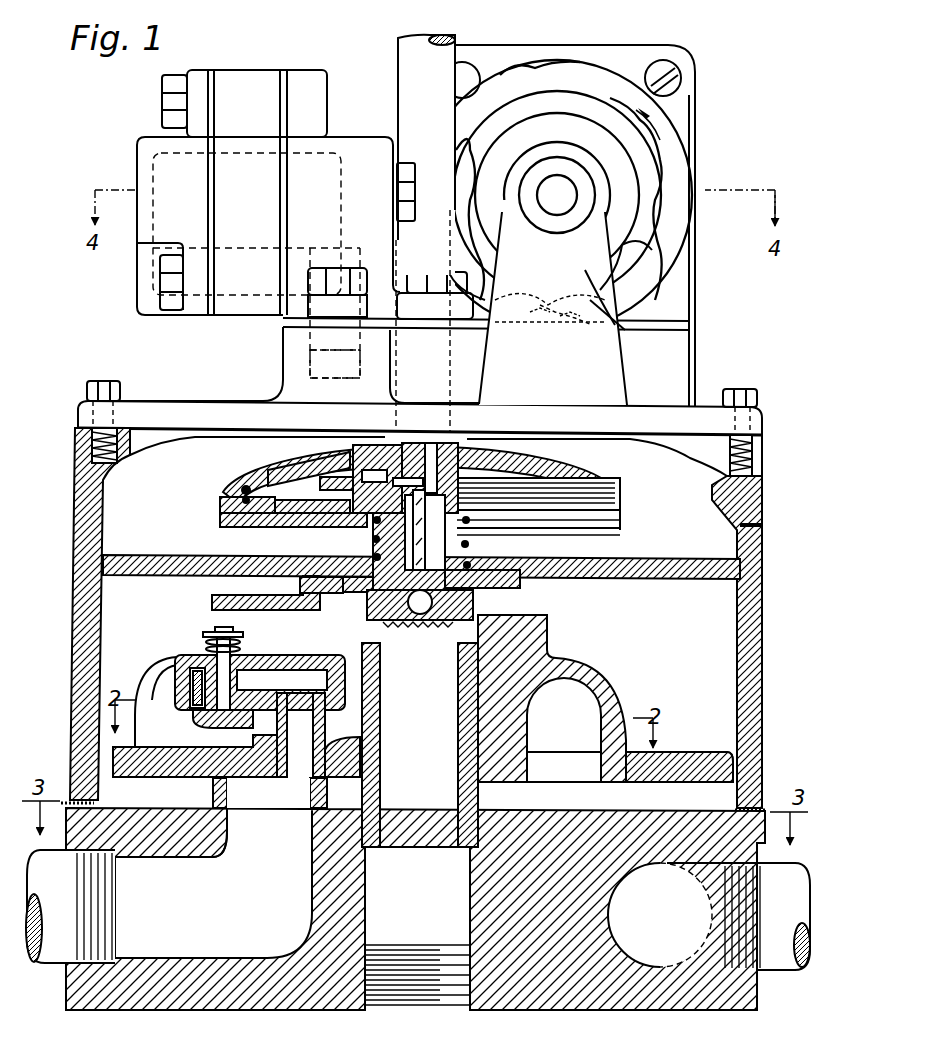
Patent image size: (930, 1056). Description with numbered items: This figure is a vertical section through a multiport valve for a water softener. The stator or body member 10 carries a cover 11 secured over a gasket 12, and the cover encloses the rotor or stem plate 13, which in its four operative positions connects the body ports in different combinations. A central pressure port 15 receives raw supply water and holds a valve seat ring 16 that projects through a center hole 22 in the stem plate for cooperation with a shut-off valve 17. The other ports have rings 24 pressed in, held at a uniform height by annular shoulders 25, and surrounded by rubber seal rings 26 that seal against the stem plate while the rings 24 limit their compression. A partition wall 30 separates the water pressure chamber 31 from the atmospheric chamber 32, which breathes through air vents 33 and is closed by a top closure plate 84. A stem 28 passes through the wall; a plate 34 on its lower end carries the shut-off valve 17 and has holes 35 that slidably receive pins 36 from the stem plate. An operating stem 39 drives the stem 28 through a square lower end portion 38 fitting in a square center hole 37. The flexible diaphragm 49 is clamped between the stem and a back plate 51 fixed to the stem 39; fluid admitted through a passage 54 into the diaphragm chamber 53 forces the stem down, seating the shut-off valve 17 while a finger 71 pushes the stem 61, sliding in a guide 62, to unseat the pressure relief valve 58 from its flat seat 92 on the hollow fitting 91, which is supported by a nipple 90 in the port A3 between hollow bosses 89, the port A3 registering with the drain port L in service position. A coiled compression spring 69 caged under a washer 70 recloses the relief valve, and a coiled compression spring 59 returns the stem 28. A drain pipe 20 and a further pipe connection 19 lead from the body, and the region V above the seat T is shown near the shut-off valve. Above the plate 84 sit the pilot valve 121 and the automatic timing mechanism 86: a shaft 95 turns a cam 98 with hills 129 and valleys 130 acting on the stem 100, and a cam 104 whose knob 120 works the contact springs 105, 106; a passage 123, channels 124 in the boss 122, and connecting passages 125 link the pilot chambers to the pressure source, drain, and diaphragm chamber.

The body member 10 is at (208, 1010).
The cover 11 is at (77, 505).
The gasket 12 is at (97, 812).
The stem plate 13 is at (646, 780).
The central pressure port 15 is at (417, 945).
The valve seat ring 16 is at (382, 715).
The shut-off valve 17 is at (372, 624).
The outlet pipe connection 19 is at (770, 970).
The drain pipe 20 is at (55, 958).
The center hole 22 is at (487, 772).
The rings 24 is at (232, 799).
The annular shoulders 25 is at (249, 826).
The rubber seal rings 26 is at (213, 799).
The stem 28 is at (472, 552).
The partition wall 30 is at (657, 578).
The water pressure chamber 31 is at (587, 698).
The atmospheric chamber 32 is at (446, 484).
The air vents 33 is at (762, 524).
The plate 34 is at (522, 606).
The holes 35 is at (522, 583).
The pins 36 is at (545, 620).
The square center hole 37 is at (468, 524).
The square lower end portion 38 is at (395, 540).
The operating stem 39 is at (400, 53).
The flexible diaphragm 49 is at (300, 522).
The back plate 51 is at (572, 474).
The diaphragm chamber 53 is at (292, 482).
The passage 54 is at (460, 464).
The pressure relief valve 58 is at (200, 738).
The coiled compression spring 59 is at (520, 528).
The stem 61 is at (205, 688).
The guide 62 is at (240, 693).
The coiled compression spring 69 is at (235, 642).
The washer 70 is at (215, 633).
The finger 71 is at (213, 600).
The top closure plate 84 is at (78, 410).
The automatic timing mechanism 86 is at (697, 130).
The hollow bosses 89 is at (172, 670).
The nipple 90 is at (318, 722).
The hollow fitting 91 is at (273, 662).
The flat seat 92 is at (190, 712).
The shaft 95 is at (556, 216).
The cam 98 is at (686, 238).
The stem 100 is at (398, 197).
The cam 104 is at (650, 190).
The contact spring 105 is at (528, 326).
The contact spring 106 is at (578, 330).
The knob 120 is at (452, 190).
The pilot valve 121 is at (150, 154).
The boss 122 is at (293, 366).
The passage 123 is at (240, 308).
The channels 124 is at (333, 380).
The connecting passages 125 is at (362, 346).
The hills 129 is at (620, 327).
The valleys 130 is at (627, 283).
The port A3 is at (340, 760).
The drain port L is at (261, 831).
The valve chamber V is at (564, 715).
The seat T is at (564, 767).